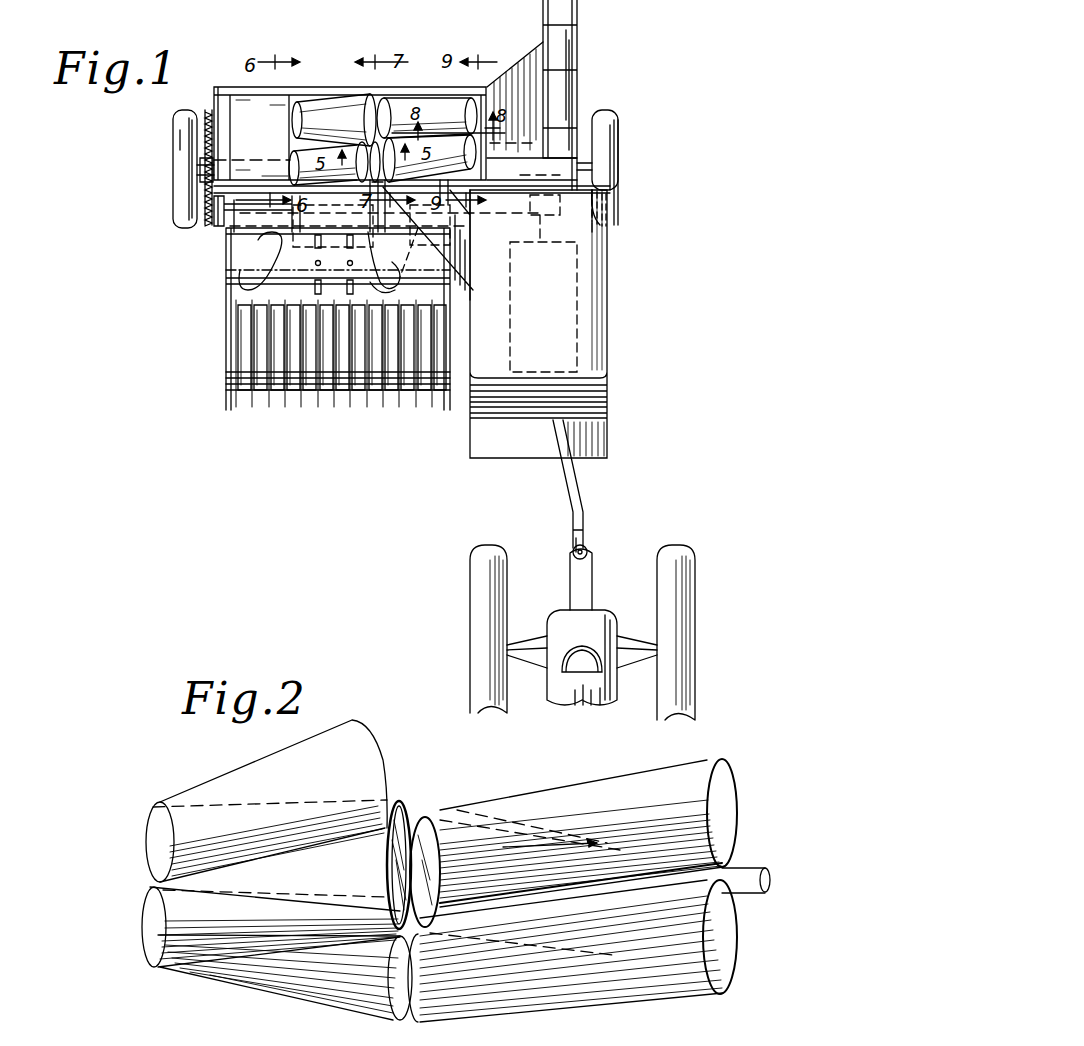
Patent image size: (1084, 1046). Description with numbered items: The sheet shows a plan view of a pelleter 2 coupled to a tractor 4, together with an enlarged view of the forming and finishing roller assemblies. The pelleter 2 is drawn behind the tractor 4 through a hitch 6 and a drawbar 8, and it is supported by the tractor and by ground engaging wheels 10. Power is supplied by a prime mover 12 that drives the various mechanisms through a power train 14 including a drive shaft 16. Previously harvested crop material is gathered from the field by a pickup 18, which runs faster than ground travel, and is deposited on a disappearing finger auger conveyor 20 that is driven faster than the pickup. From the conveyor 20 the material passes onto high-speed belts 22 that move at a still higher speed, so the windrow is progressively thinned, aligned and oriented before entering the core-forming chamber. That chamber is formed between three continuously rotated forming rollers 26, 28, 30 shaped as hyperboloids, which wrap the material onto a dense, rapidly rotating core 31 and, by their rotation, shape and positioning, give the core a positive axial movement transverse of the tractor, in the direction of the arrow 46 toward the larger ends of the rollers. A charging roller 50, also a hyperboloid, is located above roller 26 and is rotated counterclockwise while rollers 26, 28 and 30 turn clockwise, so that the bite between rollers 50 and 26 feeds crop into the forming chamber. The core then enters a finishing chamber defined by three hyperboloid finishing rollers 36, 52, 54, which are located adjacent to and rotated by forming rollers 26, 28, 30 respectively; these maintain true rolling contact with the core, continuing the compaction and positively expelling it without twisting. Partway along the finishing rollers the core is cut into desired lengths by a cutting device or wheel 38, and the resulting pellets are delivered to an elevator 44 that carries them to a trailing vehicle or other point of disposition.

In FIG. 1, the pelleter 2 is at (178, 262).
In FIG. 1, the tractor 4 is at (545, 628).
In FIG. 1, the hitch 6 is at (574, 556).
In FIG. 1, the drawbar 8 is at (570, 482).
In FIG. 1, the ground engaging wheels 10 is at (176, 190).
In FIG. 1, the prime mover 12 is at (568, 306).
In FIG. 1, the power train 14 is at (200, 104).
In FIG. 1, the drive shaft 16 is at (232, 210).
In FIG. 1, the pickup 18 is at (232, 348).
In FIG. 1, the disappearing finger auger conveyor 20 is at (246, 260).
In FIG. 1, the high-speed belts 22 is at (380, 217).
In FIG. 1, the forming roller 26 is at (297, 146).
In FIG. 2, the forming roller 26 is at (178, 910).
In FIG. 1, the forming roller 28 is at (303, 105).
In FIG. 2, the forming roller 28 is at (345, 988).
In FIG. 1, the forming roller 30 is at (382, 100).
In FIG. 2, the forming roller 30 is at (396, 805).
In FIG. 2, the core 31 is at (748, 890).
In FIG. 1, the finishing roller 36 is at (476, 172).
In FIG. 2, the finishing roller 36 is at (634, 792).
In FIG. 1, the cutting device or wheel 38 is at (480, 118).
In FIG. 1, the elevator 44 is at (563, 35).
In FIG. 2, the arrow 46 is at (470, 858).
In FIG. 1, the charging roller 50 is at (300, 164).
In FIG. 2, the charging roller 50 is at (282, 762).
In FIG. 2, the finishing roller 52 is at (605, 975).
In FIG. 1, the finishing roller 54 is at (432, 102).
In FIG. 2, the finishing roller 54 is at (436, 816).